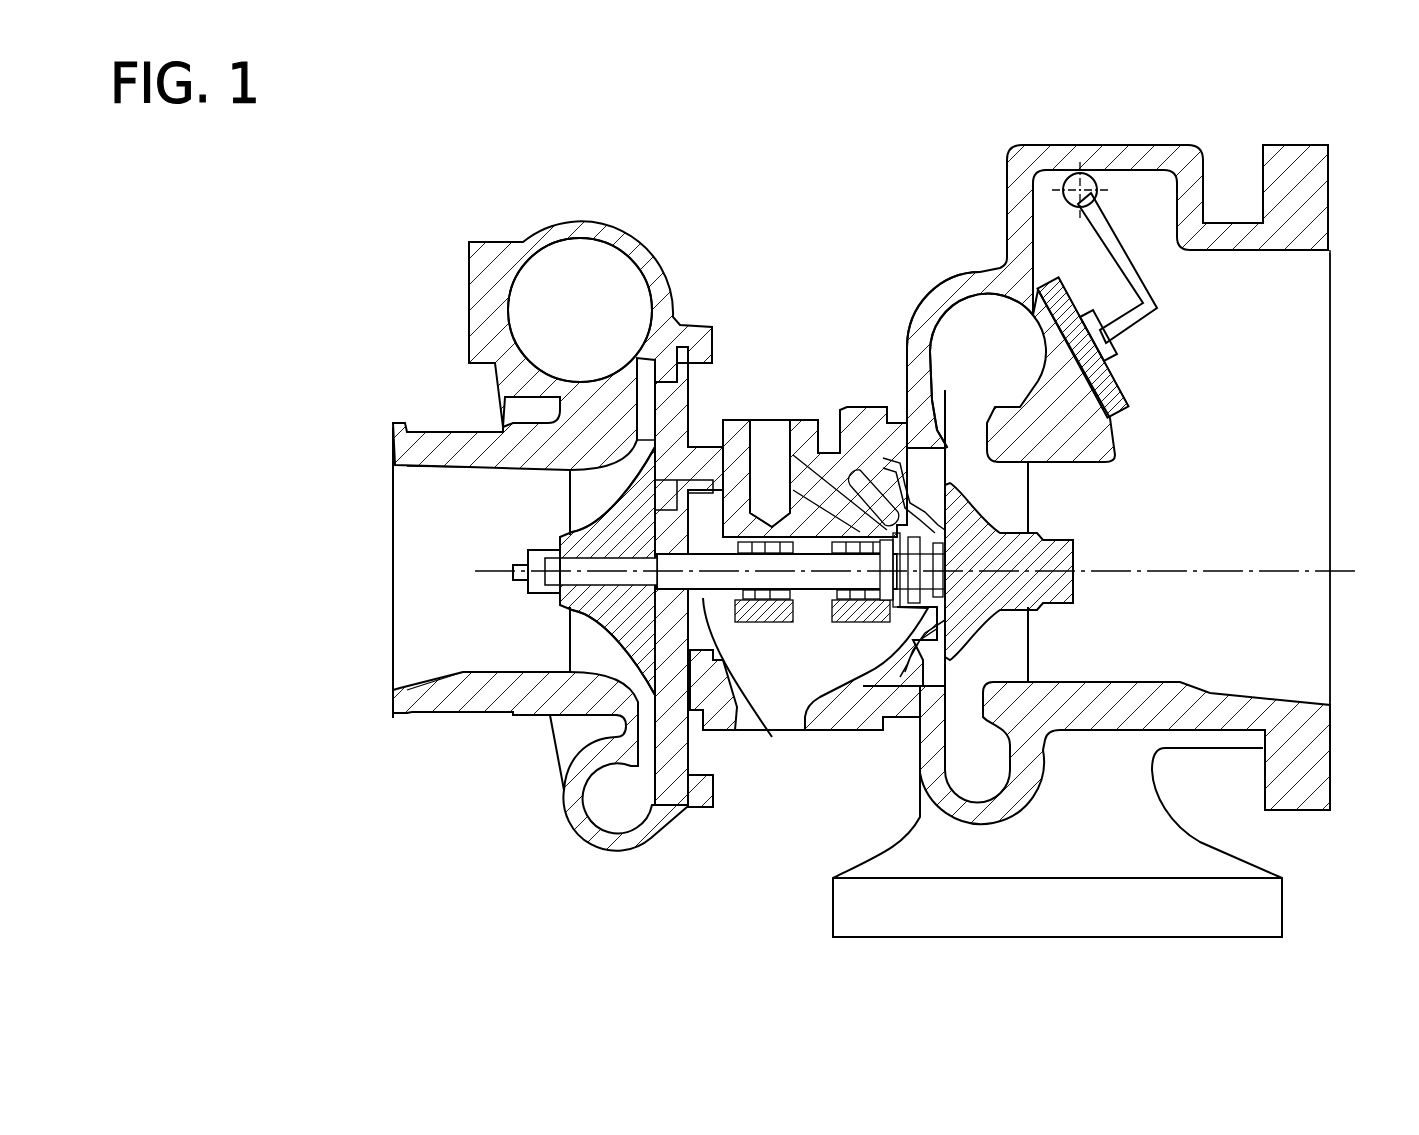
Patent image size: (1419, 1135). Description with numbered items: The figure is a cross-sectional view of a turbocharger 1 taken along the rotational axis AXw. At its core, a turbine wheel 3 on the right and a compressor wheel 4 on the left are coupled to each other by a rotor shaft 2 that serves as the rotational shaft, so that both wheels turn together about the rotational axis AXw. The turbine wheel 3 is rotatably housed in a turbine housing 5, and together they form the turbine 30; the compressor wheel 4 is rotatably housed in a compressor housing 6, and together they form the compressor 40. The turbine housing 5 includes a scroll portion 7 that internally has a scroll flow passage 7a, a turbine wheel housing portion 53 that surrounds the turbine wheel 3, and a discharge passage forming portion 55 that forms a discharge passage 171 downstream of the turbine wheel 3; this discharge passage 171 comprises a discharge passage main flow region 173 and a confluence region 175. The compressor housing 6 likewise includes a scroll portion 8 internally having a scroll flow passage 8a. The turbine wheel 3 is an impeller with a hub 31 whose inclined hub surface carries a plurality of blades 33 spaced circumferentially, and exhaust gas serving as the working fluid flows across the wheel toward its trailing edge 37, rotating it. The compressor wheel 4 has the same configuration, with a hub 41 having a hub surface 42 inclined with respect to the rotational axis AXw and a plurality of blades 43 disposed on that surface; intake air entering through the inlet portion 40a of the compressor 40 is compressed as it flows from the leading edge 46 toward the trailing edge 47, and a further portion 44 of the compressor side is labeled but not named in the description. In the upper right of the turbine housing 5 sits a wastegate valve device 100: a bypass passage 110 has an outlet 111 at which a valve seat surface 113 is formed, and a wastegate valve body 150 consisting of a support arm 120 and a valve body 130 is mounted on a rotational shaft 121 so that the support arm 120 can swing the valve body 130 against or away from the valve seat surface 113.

The turbocharger 1 is at (822, 285).
The rotor shaft 2 is at (773, 738).
The turbine wheel 3 is at (1062, 609).
The compressor wheel 4 is at (582, 630).
The turbine housing 5 is at (990, 290).
The compressor housing 6 is at (418, 440).
The scroll portion 7 is at (967, 320).
The scroll flow passage 7a is at (937, 324).
The scroll portion 8 is at (575, 268).
The scroll flow passage 8a is at (562, 230).
The turbine 30 is at (1265, 120).
The hub 31 is at (1038, 598).
The blades 33 is at (1017, 653).
The trailing edge 37 is at (1030, 470).
The compressor 40 is at (430, 213).
The inlet portion 40a is at (418, 580).
The hub 41 is at (575, 612).
The hub surface 42 is at (620, 645).
The blades 43 is at (565, 537).
The inlet wall portion 44 is at (570, 470).
The leading edge 46 is at (585, 522).
The trailing edge 47 is at (645, 432).
The turbine wheel housing portion 53 is at (1017, 517).
The discharge passage forming portion 55 is at (1170, 550).
The wastegate valve device 100 is at (1163, 253).
The bypass passage 110 is at (1088, 402).
The outlet 111 is at (1082, 318).
The valve seat surface 113 is at (1133, 412).
The support arm 120 is at (1133, 290).
The rotational shaft 121 is at (1082, 185).
The valve body 130 is at (1125, 360).
The wastegate valve body 150 is at (1152, 325).
The discharge passage 171 is at (1240, 491).
The discharge passage main flow region 173 is at (1092, 527).
The confluence region 175 is at (1185, 491).
The rotational axis AXw is at (1350, 575).